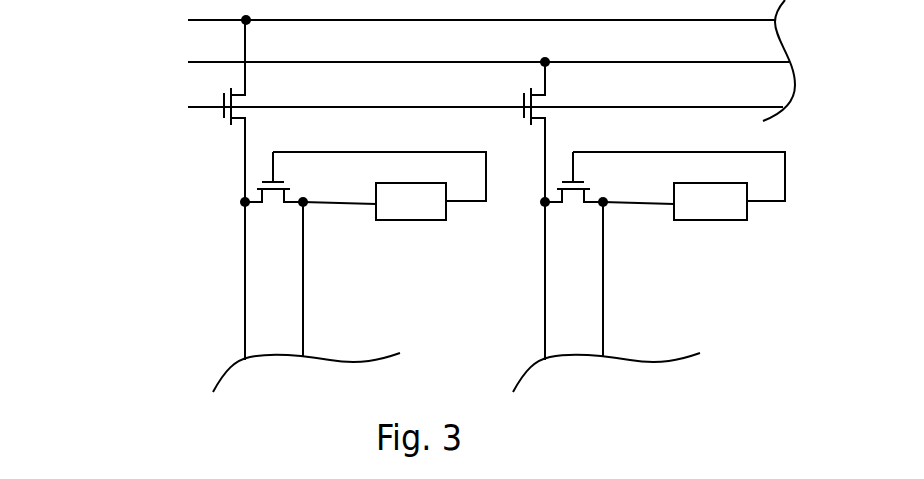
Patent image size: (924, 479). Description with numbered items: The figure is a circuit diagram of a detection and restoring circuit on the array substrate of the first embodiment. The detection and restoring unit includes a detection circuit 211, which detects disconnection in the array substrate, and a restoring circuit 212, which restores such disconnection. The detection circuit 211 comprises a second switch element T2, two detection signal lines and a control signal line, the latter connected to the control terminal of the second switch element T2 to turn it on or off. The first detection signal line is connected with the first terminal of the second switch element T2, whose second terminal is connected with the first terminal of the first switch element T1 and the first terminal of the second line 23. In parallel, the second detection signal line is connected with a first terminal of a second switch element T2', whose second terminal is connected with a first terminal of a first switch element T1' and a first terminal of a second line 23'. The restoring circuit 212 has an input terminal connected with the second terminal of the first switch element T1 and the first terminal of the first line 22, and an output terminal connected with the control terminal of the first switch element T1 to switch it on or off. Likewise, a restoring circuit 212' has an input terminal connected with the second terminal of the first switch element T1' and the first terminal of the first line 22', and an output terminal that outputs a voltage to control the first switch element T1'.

The detection circuit 211 is at (83, 0).
The restoring circuit 212 is at (379, 195).
The restoring circuit 212' is at (679, 202).
The first line 22 is at (313, 277).
The first line 22' is at (618, 277).
The second line 23 is at (255, 278).
The second line 23' is at (558, 278).
The first switch element T1 is at (292, 177).
The first switch element T1' is at (592, 177).
The second switch element T2 is at (253, 111).
The second switch element T2' is at (558, 132).